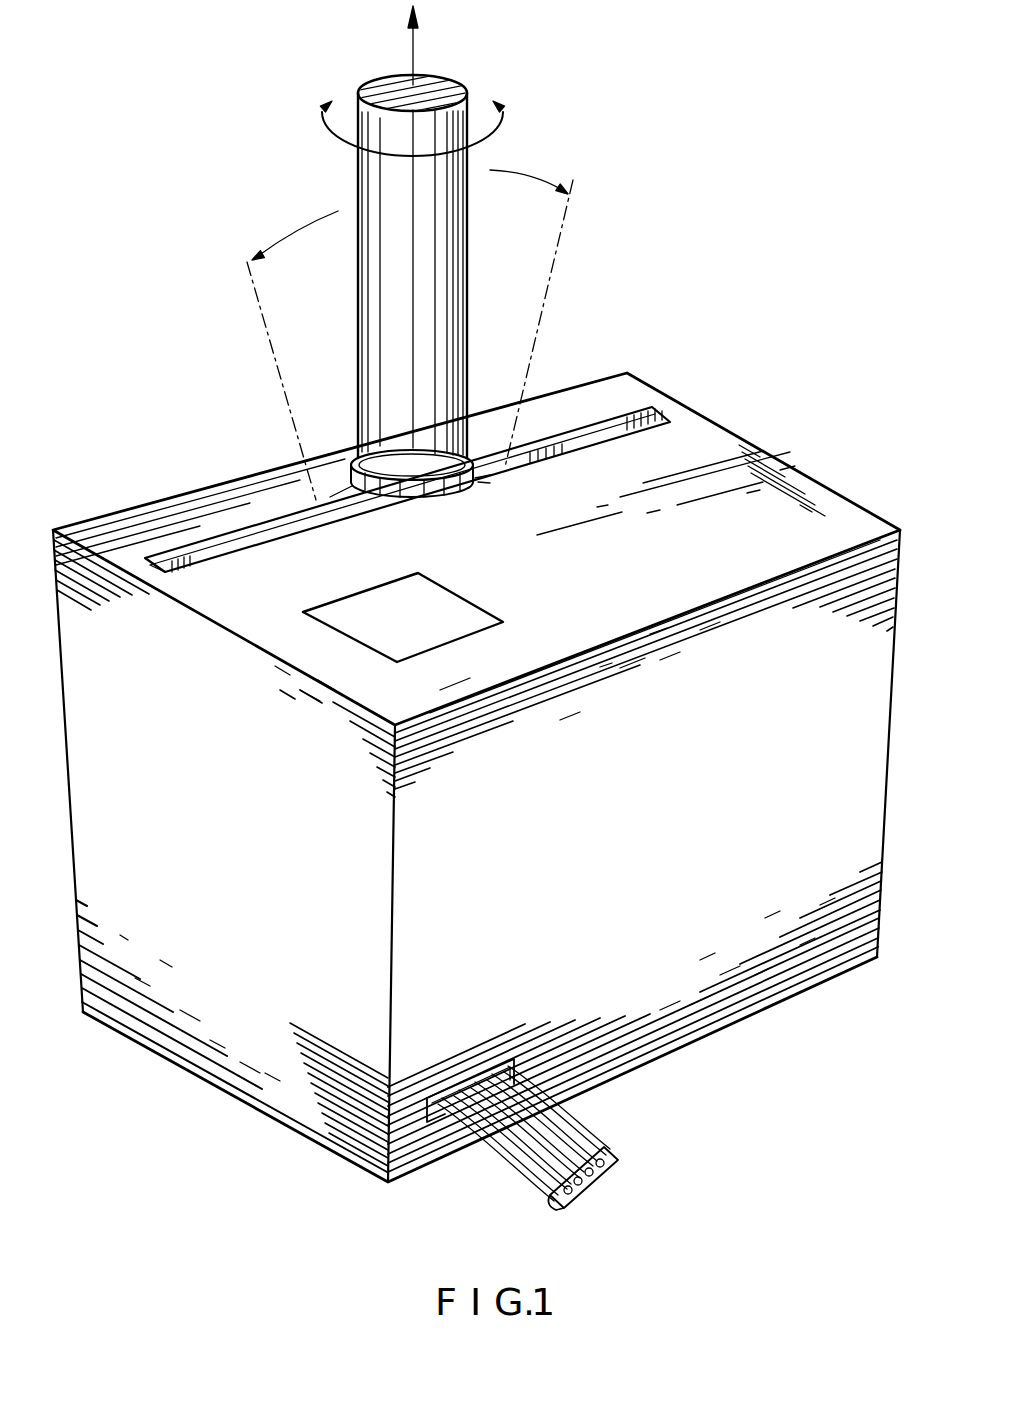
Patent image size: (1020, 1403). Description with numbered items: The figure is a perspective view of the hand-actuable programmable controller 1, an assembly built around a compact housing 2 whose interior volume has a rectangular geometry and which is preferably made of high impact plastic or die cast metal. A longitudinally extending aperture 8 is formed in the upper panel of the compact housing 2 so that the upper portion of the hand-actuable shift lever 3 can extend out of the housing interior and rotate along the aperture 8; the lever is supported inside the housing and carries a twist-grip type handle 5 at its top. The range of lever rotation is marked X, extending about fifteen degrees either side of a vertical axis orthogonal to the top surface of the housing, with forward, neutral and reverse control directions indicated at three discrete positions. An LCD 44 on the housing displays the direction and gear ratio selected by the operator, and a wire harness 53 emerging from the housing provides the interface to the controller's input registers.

The programmable controller 1 is at (476, 635).
The compact housing 2 is at (693, 1040).
The hand-actuable shift lever 3 is at (343, 486).
The twist-grip type handle 5 is at (455, 335).
The longitudinally extending aperture 8 is at (192, 556).
The LCD 44 is at (443, 640).
The wire harness 53 is at (505, 1180).